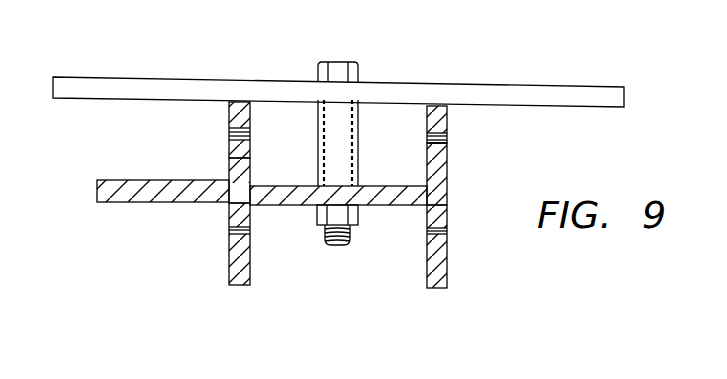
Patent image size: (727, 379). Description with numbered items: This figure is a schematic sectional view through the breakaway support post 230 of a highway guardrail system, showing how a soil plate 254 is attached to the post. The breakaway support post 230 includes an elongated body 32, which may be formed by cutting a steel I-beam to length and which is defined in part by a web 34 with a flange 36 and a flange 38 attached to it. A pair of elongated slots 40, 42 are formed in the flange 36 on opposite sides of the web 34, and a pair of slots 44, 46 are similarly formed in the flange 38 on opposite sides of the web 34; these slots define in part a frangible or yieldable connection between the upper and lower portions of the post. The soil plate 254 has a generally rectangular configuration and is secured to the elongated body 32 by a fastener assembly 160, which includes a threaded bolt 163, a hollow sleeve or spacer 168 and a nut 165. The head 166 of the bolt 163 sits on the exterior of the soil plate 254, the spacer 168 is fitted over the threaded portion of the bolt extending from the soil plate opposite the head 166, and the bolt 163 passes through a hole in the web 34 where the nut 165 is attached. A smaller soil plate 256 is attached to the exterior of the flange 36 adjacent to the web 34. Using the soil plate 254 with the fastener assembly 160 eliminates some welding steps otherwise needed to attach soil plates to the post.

The soil plate 254 is at (100, 88).
The fastener assembly 160 is at (307, 46).
The head 166 is at (360, 73).
The hollow sleeve or spacer 168 is at (358, 137).
The elongated body 32 is at (456, 195).
The soil plate 256 is at (123, 180).
The elongated slot 40 is at (228, 150).
The flange 36 is at (228, 170).
The elongated slot 42 is at (250, 250).
The flange 38 is at (447, 122).
The slot 44 is at (447, 157).
The slot 46 is at (447, 247).
The web 34 is at (285, 185).
The nut 165 is at (358, 219).
The threaded bolt 163 is at (340, 246).
The breakaway support post 230 is at (190, 236).